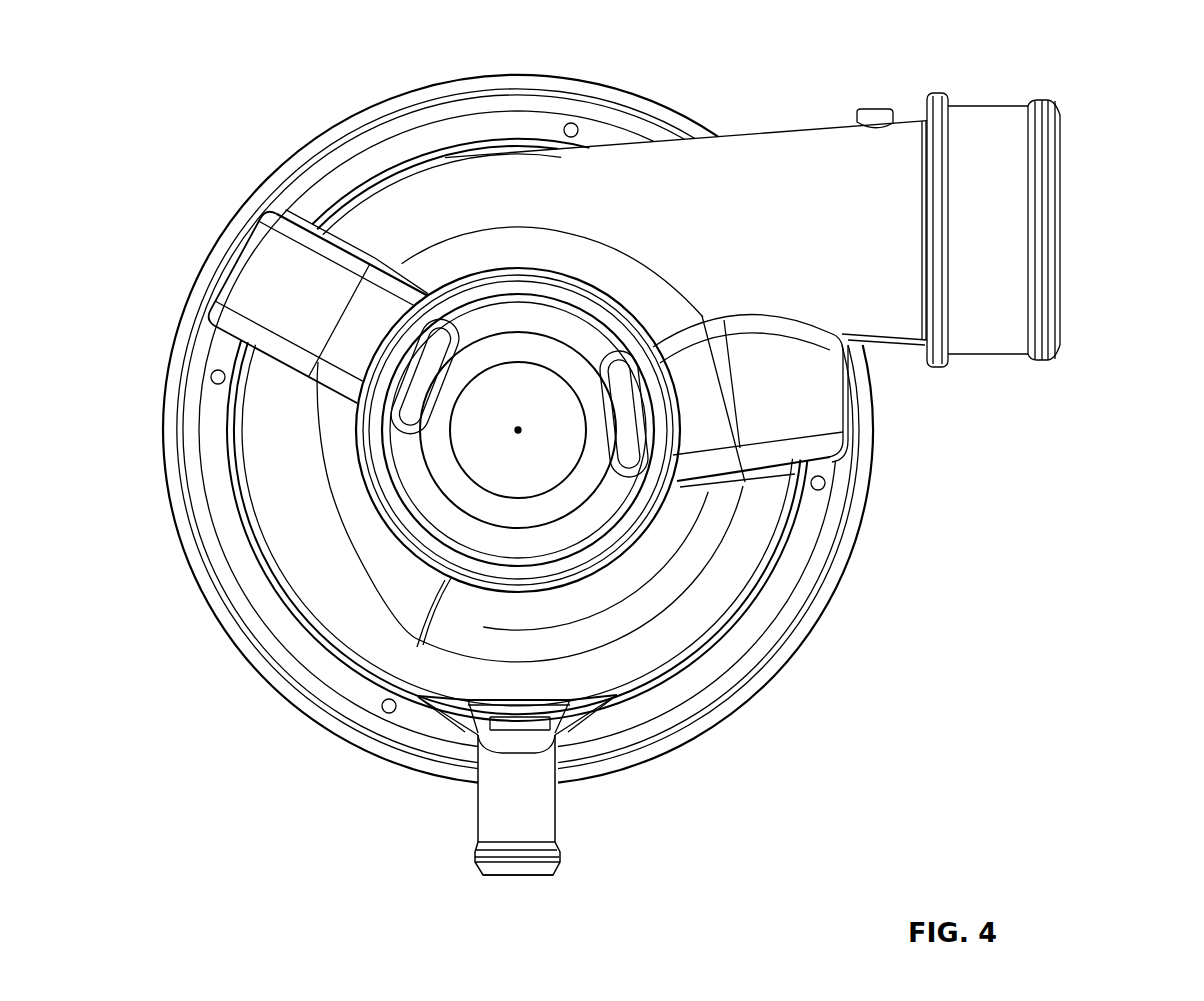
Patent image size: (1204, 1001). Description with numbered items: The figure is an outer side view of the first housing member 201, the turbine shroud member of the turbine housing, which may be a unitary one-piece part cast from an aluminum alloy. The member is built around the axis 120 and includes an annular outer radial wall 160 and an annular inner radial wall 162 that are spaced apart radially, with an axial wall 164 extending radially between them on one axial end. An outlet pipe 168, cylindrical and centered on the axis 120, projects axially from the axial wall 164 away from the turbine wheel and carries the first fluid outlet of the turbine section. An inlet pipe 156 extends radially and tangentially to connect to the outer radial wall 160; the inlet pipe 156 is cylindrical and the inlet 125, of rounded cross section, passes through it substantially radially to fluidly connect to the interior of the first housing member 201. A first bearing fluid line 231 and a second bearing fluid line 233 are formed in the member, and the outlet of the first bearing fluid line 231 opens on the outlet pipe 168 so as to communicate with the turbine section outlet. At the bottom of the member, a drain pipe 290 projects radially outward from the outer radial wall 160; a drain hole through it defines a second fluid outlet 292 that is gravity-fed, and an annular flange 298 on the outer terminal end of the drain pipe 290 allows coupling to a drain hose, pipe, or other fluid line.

The first housing member 201 is at (637, 56).
The axis 120 is at (519, 428).
The inlet 125 is at (1063, 230).
The inlet pipe 156 is at (790, 150).
The outer radial wall 160 is at (733, 703).
The inner radial wall 162 is at (560, 482).
The axial wall 164 is at (750, 540).
The outlet pipe 168 is at (423, 492).
The first bearing fluid line 231 is at (420, 357).
The second bearing fluid line 233 is at (640, 395).
The drain pipe 290 is at (560, 810).
The second fluid outlet 292 is at (516, 881).
The annular flange 298 is at (558, 855).